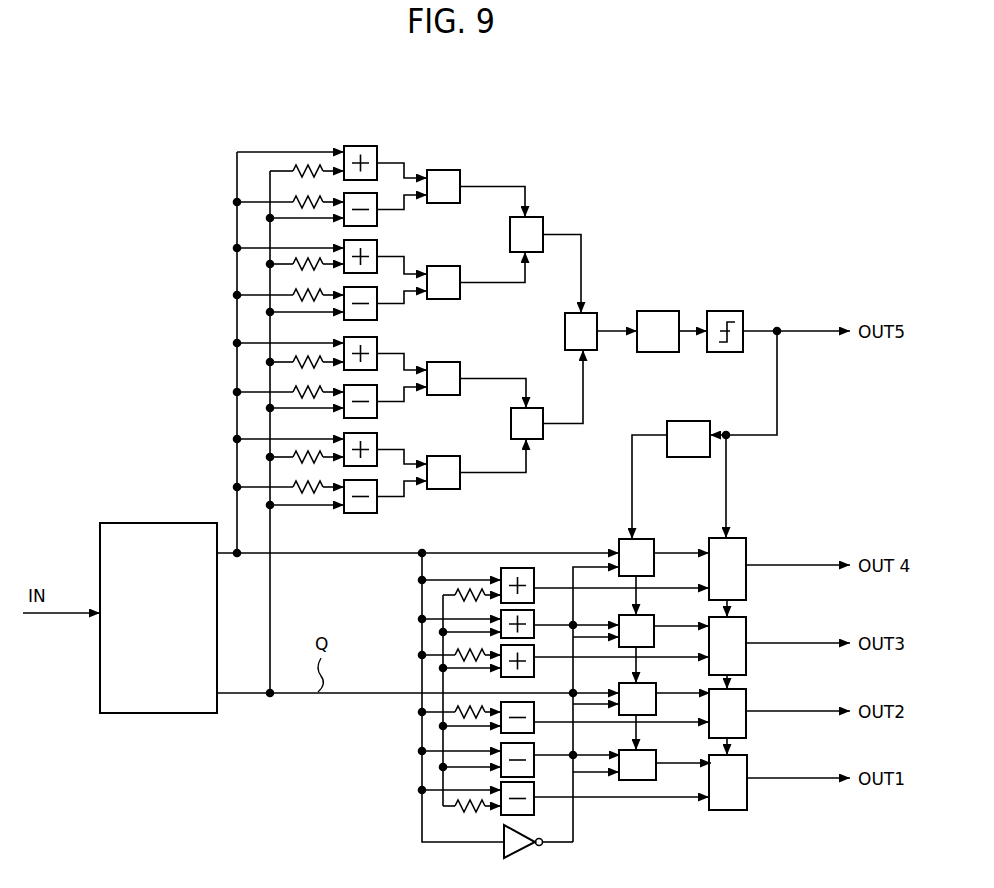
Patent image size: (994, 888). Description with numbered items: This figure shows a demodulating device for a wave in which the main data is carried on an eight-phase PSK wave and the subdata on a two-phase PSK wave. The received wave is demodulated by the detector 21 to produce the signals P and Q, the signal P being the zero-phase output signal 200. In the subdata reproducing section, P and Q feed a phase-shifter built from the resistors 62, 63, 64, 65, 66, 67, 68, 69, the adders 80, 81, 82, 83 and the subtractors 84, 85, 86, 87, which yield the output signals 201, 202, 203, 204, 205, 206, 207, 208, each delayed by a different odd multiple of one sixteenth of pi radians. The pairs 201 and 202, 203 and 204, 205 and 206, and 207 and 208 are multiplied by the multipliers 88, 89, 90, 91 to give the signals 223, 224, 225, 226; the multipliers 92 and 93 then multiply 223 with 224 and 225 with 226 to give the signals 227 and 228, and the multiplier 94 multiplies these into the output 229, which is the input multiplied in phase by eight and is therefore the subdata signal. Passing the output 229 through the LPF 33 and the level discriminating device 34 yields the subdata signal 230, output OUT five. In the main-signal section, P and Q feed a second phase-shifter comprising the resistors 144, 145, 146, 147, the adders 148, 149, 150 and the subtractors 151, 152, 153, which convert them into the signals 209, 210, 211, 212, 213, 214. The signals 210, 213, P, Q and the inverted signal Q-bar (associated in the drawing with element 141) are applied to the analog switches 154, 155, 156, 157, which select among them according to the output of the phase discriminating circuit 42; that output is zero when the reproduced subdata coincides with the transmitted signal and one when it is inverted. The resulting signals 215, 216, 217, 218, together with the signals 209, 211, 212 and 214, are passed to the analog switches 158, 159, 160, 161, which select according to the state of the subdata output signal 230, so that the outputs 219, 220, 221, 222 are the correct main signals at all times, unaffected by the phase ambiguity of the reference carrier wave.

The detector 21 is at (100, 690).
The output signal P 200 is at (389, 552).
The resistor 62 is at (310, 158).
The resistor 63 is at (304, 202).
The resistor 64 is at (314, 260).
The resistor 65 is at (303, 294).
The resistor 66 is at (291, 356).
The resistor 67 is at (302, 389).
The resistor 68 is at (300, 464).
The resistor 69 is at (304, 498).
The adder 80 is at (372, 146).
The adder 81 is at (377, 245).
The adder 82 is at (344, 338).
The adder 83 is at (344, 434).
The subtractor 84 is at (377, 217).
The subtractor 85 is at (377, 318).
The subtractor 86 is at (377, 418).
The subtractor 87 is at (377, 513).
The multiplier 88 is at (452, 170).
The multiplier 89 is at (454, 266).
The multiplier 90 is at (458, 364).
The multiplier 91 is at (460, 456).
The multiplier 92 is at (542, 220).
The multiplier 93 is at (543, 438).
The multiplier 94 is at (565, 340).
The LPF 33 is at (659, 309).
The level discriminating device 34 is at (727, 309).
The phase discriminating circuit 42 is at (698, 416).
The inverter 141 is at (516, 860).
The resistor 144 is at (466, 590).
The resistor 145 is at (454, 653).
The resistor 146 is at (470, 708).
The resistor 147 is at (484, 812).
The adder 148 is at (516, 568).
The adder 149 is at (542, 612).
The adder 150 is at (534, 670).
The subtractor 151 is at (524, 702).
The subtractor 152 is at (534, 748).
The subtractor 153 is at (532, 815).
The analog switch 154 is at (619, 542).
The analog switch 155 is at (653, 616).
The analog switch 156 is at (655, 684).
The analog switch 157 is at (654, 782).
The analog switch 158 is at (744, 538).
The analog switch 159 is at (746, 632).
The analog switch 160 is at (746, 700).
The analog switch 161 is at (747, 755).
The output signal 201 is at (405, 157).
The output signal 202 is at (406, 209).
The output signal 203 is at (406, 259).
The output signal 204 is at (406, 303).
The output signal 205 is at (404, 355).
The output signal 206 is at (404, 405).
The output signal 207 is at (404, 452).
The output signal 208 is at (404, 507).
The signal 209 is at (620, 604).
The signal 210 is at (578, 637).
The signal 211 is at (579, 667).
The signal 212 is at (580, 728).
The signal 213 is at (552, 756).
The signal 214 is at (594, 798).
The signal 215 is at (672, 544).
The signal 216 is at (674, 628).
The signal 217 is at (658, 700).
The signal 218 is at (660, 764).
The output signal OUT 4 219 is at (822, 563).
The output signal OUT 3 220 is at (798, 637).
The output signal OUT 2 221 is at (798, 707).
The output signal OUT 1 222 is at (798, 772).
The signal 223 is at (487, 185).
The signal 224 is at (486, 286).
The signal 225 is at (496, 376).
The signal 226 is at (486, 478).
The signal 227 is at (584, 270).
The signal 228 is at (583, 417).
The output 229 is at (610, 333).
The subdata signal OUT 5 230 is at (802, 323).